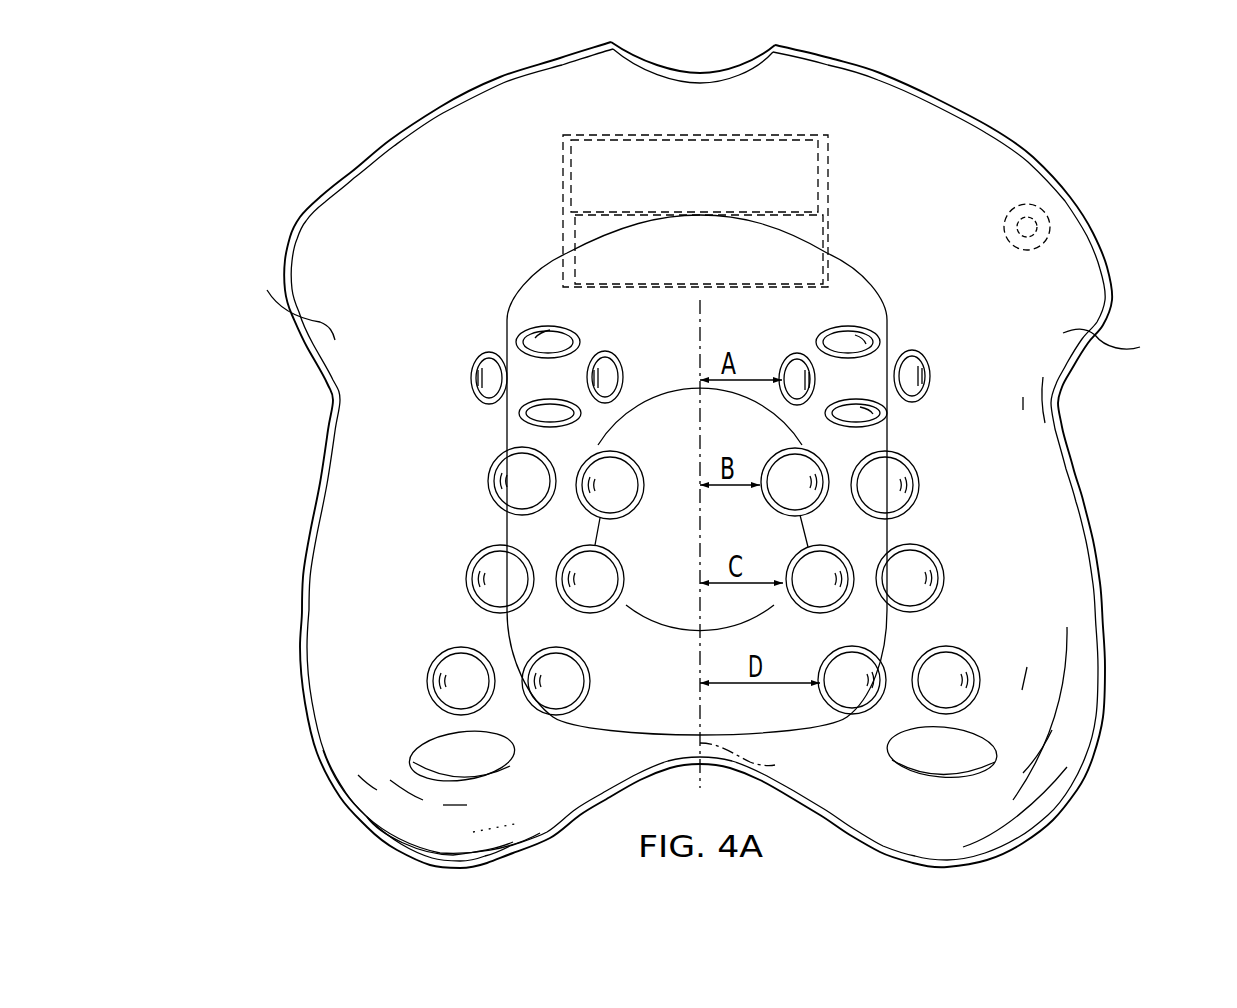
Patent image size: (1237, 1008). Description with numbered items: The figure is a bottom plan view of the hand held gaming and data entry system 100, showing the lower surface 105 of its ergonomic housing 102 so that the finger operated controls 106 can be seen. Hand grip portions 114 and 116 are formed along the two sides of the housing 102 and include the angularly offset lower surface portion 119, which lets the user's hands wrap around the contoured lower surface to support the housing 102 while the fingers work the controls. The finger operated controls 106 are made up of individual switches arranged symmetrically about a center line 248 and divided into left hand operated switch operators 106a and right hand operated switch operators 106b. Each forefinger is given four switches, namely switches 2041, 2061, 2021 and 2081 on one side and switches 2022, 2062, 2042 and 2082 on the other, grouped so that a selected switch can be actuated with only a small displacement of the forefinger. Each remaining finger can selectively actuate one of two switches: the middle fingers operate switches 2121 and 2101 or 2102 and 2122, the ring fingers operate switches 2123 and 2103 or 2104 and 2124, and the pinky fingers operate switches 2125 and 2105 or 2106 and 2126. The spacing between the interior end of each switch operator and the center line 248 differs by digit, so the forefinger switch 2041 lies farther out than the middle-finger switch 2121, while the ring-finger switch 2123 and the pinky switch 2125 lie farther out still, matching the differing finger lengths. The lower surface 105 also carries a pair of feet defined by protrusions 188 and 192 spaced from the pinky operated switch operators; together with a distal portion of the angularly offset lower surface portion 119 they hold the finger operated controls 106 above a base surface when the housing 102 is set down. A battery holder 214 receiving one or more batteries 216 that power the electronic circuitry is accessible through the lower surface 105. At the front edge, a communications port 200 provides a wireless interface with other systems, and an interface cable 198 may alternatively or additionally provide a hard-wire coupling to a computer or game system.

The hand held gaming and data entry system 100 is at (934, 90).
The ergonomic housing 102 is at (1090, 513).
The lower surface 105 is at (835, 292).
The finger operated controls 106 is at (480, 326).
The left hand operated switch operators 106a is at (850, 745).
The right hand operated switch operators 106b is at (550, 732).
The hand grip portion 114 is at (280, 446).
The hand grip portion 116 is at (1097, 428).
The angularly offset lower surface portion 119 is at (700, 313).
The protrusion 188 is at (408, 757).
The protrusion 192 is at (997, 757).
The interface cable 198 is at (1037, 225).
The communications port 200 is at (701, 68).
The battery holder 214 is at (830, 143).
The batteries 216 is at (772, 135).
The center line 248 is at (757, 763).
The switch 2021 is at (913, 377).
The switch 2022 is at (490, 378).
The switch 2041 is at (797, 378).
The switch 2042 is at (603, 380).
The switch 2061 is at (848, 342).
The switch 2062 is at (548, 342).
The switch 2081 is at (880, 420).
The switch 2082 is at (548, 413).
The switch 2101 is at (888, 490).
The switch 2102 is at (515, 482).
The switch 2103 is at (915, 590).
The switch 2104 is at (492, 578).
The switch 2105 is at (953, 687).
The switch 2106 is at (462, 681).
The switch 2121 is at (795, 480).
The switch 2122 is at (610, 493).
The switch 2123 is at (815, 578).
The switch 2124 is at (597, 587).
The switch 2125 is at (845, 678).
The switch 2126 is at (565, 680).